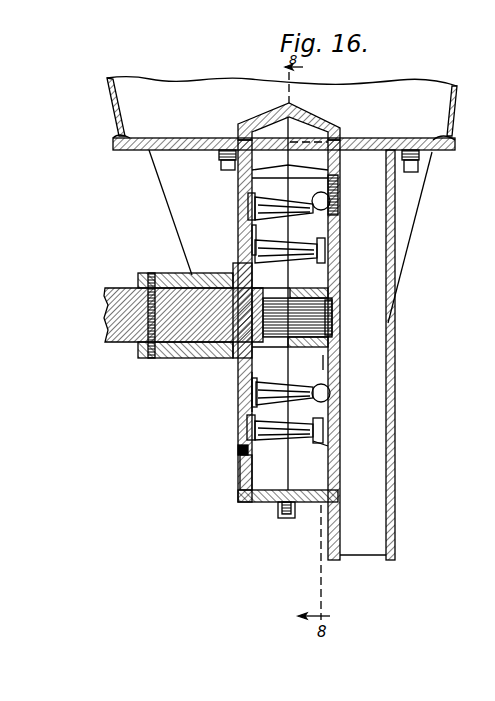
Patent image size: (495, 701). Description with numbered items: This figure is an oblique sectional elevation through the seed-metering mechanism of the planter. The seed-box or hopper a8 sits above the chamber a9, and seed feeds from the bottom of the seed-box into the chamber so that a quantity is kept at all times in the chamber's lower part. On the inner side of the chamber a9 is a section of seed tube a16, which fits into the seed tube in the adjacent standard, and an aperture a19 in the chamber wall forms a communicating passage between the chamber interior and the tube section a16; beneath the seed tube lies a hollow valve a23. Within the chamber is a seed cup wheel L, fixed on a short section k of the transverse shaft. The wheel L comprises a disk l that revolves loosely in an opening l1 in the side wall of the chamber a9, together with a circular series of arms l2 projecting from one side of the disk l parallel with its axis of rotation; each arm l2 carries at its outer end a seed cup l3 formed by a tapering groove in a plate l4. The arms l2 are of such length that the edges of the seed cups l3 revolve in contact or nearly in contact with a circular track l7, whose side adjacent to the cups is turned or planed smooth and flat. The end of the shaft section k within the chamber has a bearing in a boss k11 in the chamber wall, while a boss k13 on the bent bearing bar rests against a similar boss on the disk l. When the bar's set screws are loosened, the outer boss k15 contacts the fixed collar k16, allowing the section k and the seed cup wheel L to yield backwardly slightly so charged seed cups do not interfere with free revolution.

The seed-box a8 is at (282, 176).
The chamber a9 is at (247, 450).
The section of seed tube a16 is at (370, 318).
The aperture a19 is at (333, 201).
The hollow valve a23 is at (397, 215).
The short section of shaft k is at (115, 318).
The boss k11 is at (323, 362).
The boss k13 is at (233, 357).
The outer boss k15 is at (197, 352).
The fixed collar k16 is at (140, 348).
The disk l is at (237, 407).
The opening l1 is at (240, 462).
The arms l2 is at (257, 247).
The seed cup l3 is at (323, 198).
The plate l4 is at (333, 250).
The circular track l7 is at (335, 453).
The seed cup wheel L is at (286, 331).